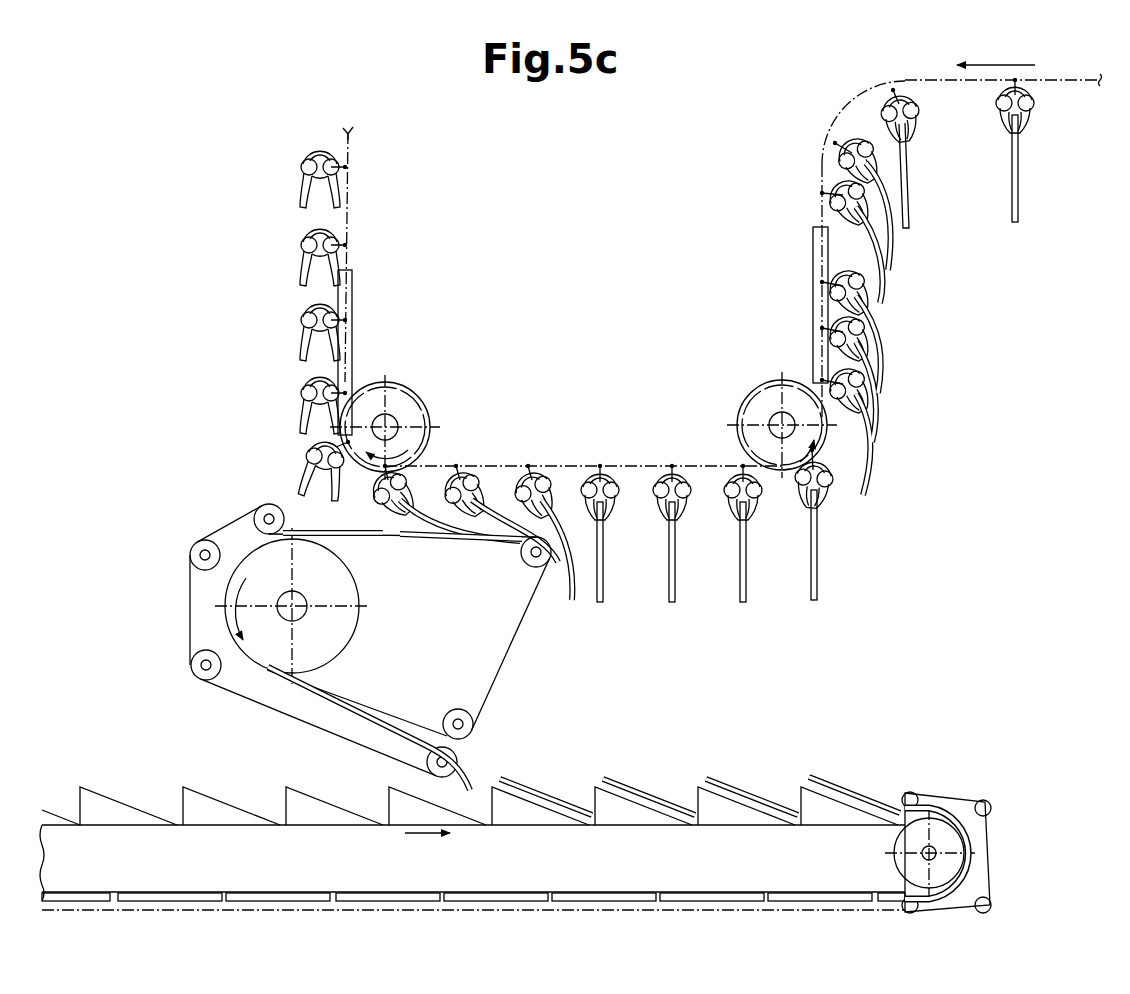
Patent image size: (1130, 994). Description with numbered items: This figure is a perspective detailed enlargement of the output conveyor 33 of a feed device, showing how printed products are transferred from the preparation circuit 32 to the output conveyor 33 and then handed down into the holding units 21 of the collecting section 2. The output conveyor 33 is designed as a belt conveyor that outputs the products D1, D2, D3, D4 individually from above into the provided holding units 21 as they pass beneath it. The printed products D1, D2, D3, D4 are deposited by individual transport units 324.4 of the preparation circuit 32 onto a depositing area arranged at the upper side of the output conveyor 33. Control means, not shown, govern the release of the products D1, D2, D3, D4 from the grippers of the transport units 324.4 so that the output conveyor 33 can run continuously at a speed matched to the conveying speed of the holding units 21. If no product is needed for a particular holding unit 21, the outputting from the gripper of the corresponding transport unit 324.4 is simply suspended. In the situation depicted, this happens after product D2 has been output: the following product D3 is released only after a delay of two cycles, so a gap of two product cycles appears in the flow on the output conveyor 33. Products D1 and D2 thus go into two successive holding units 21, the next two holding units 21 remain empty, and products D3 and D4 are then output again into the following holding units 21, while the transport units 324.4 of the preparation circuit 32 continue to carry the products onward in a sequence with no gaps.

The collecting section 2 is at (183, 335).
The preparation circuit 32 is at (514, 296).
The transport unit 324.4 is at (432, 461).
The output conveyor 33 is at (148, 555).
The holding unit 21 is at (148, 778).
The printed product D1 is at (482, 792).
The printed product D2 is at (360, 700).
The printed product D3 is at (310, 533).
The printed product D4 is at (455, 548).